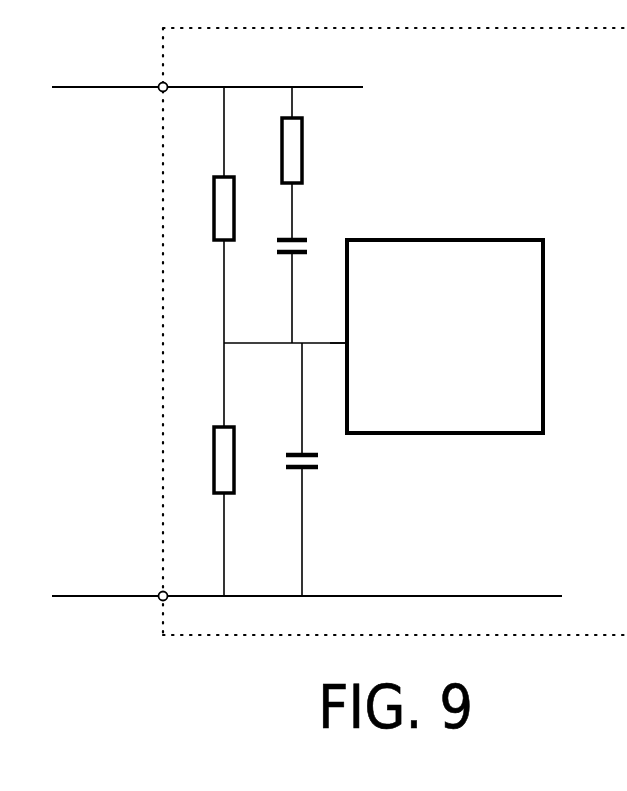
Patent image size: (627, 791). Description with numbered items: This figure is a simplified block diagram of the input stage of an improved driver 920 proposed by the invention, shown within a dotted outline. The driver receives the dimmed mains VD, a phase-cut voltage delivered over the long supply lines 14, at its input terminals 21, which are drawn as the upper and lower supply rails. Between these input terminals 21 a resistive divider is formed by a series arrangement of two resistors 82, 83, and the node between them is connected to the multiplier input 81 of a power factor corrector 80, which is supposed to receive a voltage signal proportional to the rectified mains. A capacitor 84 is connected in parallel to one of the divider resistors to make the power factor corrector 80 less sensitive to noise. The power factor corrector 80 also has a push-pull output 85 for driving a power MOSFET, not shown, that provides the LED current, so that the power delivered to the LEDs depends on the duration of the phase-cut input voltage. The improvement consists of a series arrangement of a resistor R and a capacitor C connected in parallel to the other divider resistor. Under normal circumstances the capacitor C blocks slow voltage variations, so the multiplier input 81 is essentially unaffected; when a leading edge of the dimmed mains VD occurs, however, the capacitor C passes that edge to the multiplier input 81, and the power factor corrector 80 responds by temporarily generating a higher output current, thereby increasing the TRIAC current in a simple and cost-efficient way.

The supply lines 14 is at (70, 85).
The input terminals 21 is at (307, 326).
The power factor corrector 80 is at (445, 336).
The multiplier input 81 is at (359, 344).
The resistor 82 is at (206, 215).
The resistor 83 is at (206, 469).
The capacitor 84 is at (314, 469).
The push-pull output 85 is at (523, 336).
The driver 920 is at (150, 359).
The resistor R is at (303, 179).
The capacitor C is at (298, 291).
The dimmed mains VD is at (287, 80).